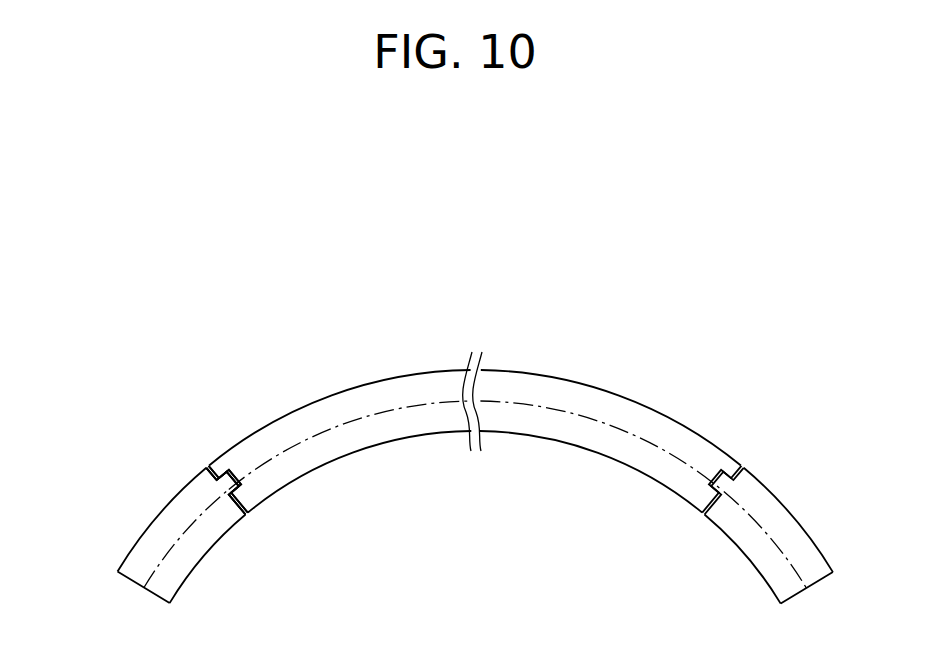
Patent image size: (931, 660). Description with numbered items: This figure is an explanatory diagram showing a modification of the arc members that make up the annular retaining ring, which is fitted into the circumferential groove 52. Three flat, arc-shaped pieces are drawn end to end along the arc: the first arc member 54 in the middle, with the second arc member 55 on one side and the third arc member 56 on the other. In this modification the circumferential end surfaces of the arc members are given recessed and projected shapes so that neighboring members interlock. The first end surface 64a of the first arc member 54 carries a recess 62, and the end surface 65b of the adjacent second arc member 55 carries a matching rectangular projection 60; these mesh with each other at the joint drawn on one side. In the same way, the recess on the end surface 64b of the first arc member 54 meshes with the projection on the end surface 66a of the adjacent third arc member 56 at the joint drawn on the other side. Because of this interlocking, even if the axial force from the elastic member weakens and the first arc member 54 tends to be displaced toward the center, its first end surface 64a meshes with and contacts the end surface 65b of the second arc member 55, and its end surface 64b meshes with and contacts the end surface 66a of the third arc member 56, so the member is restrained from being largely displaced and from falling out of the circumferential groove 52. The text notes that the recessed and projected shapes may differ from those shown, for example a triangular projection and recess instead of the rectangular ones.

The circumferential groove 52 is at (544, 421).
The first arc member 54 is at (577, 395).
The second arc member 55 is at (147, 553).
The third arc member 56 is at (786, 532).
The rectangular projection 60 is at (233, 478).
The recess 62 is at (229, 490).
The first end surface 64a is at (203, 490).
The end surface 64b is at (745, 481).
The end surface 65b is at (248, 501).
The end surface 66a is at (705, 506).